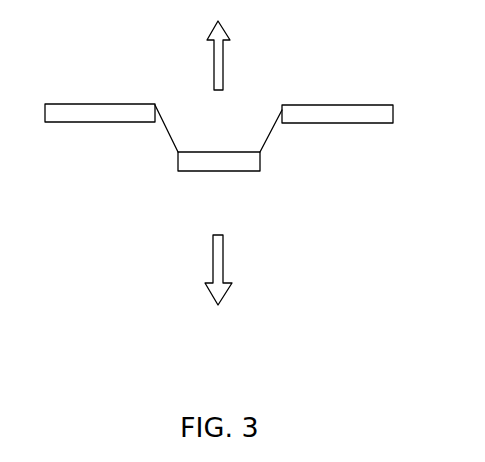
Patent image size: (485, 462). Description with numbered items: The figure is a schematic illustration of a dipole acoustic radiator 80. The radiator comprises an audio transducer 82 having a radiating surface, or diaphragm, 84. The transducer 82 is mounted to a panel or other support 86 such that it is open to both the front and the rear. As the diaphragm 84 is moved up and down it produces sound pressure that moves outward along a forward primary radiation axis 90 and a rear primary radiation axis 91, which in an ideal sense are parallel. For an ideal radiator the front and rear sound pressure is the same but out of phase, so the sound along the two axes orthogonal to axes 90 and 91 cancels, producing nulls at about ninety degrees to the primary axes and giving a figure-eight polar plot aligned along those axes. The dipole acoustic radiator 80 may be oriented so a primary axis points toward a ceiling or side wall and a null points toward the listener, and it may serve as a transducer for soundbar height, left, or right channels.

The dipole acoustic radiator 80 is at (216, 159).
The audio transducer 82 is at (282, 155).
The radiating surface 84 is at (271, 131).
The panel or other support 86 is at (85, 104).
The forward primary radiation axis 90 is at (223, 57).
The rear primary radiation axis 91 is at (223, 260).